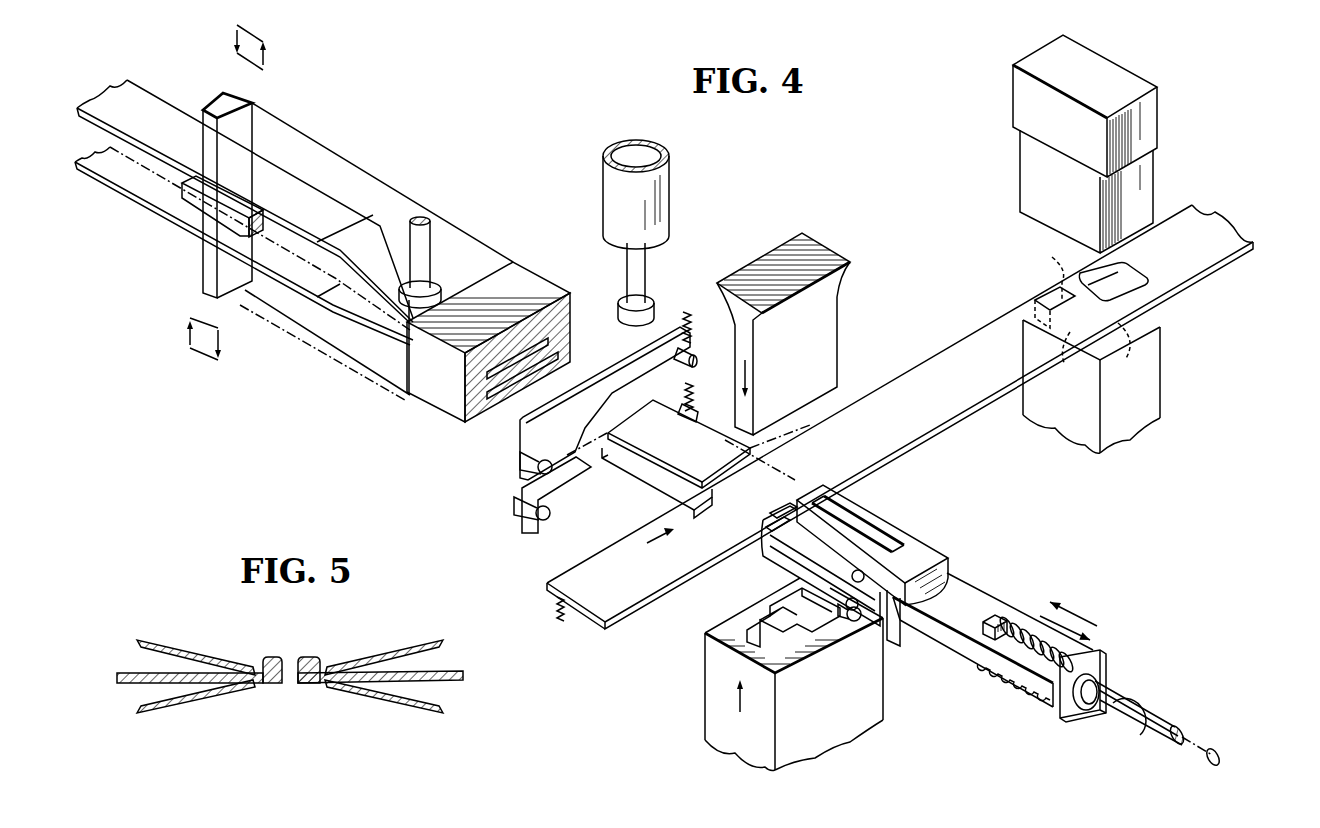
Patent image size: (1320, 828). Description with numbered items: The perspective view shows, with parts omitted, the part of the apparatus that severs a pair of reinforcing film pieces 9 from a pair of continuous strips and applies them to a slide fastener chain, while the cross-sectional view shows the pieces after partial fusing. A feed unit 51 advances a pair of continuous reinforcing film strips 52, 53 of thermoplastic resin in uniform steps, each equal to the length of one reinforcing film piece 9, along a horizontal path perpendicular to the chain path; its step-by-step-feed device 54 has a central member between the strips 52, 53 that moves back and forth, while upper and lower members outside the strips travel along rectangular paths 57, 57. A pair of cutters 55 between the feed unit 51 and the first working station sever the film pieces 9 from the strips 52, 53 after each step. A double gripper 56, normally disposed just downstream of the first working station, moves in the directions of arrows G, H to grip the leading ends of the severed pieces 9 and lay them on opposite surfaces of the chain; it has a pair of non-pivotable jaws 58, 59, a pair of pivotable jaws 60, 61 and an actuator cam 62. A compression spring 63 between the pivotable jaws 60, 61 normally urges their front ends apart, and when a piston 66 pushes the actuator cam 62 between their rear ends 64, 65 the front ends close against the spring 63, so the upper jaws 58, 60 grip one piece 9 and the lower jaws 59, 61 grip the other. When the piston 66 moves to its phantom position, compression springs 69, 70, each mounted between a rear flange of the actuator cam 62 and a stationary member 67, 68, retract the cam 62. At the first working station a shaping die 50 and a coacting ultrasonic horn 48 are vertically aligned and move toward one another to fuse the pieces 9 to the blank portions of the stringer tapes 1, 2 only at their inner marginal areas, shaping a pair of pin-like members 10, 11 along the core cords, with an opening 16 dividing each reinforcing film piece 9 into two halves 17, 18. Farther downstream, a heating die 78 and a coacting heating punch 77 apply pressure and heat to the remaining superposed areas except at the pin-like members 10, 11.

In FIG. 5, the stringer tape 1 is at (440, 670).
In FIG. 5, the stringer tape 2 is at (140, 673).
In FIG. 4, the reinforcing film piece 9 is at (694, 438).
In FIG. 4, the pin-like member 10 is at (1058, 314).
In FIG. 5, the pin-like member 10 is at (308, 658).
In FIG. 4, the pin-like member 11 is at (1065, 365).
In FIG. 5, the pin-like member 11 is at (272, 660).
In FIG. 4, the opening 16 is at (1150, 283).
In FIG. 4, the half of reinforcing film piece 17 is at (1055, 275).
In FIG. 5, the half of reinforcing film piece 17 is at (392, 650).
In FIG. 4, the half of reinforcing film piece 18 is at (1125, 360).
In FIG. 5, the half of reinforcing film piece 18 is at (193, 653).
In FIG. 4, the ultrasonic horn 48 is at (768, 258).
In FIG. 4, the shaping die 50 is at (760, 674).
In FIG. 4, the feed unit 51 is at (561, 264).
In FIG. 4, the continuous reinforcing film strip 52 is at (152, 106).
In FIG. 4, the continuous reinforcing film strip 53 is at (100, 167).
In FIG. 4, the step-by-step-feed device 54 is at (203, 212).
In FIG. 4, the cutter 55 is at (613, 478).
In FIG. 4, the double gripper 56 is at (969, 602).
In FIG. 4, the rectangular path 57 is at (265, 55).
In FIG. 4, the non-pivotable jaw 58 is at (783, 513).
In FIG. 4, the non-pivotable jaw 59 is at (783, 553).
In FIG. 4, the pivotable jaw 60 is at (843, 502).
In FIG. 4, the pivotable jaw 61 is at (800, 582).
In FIG. 4, the actuator cam 62 is at (970, 607).
In FIG. 4, the compression spring 63 is at (862, 622).
In FIG. 4, the rear end of pivotable jaw 64 is at (940, 563).
In FIG. 4, the rear end of pivotable jaw 65 is at (905, 637).
In FIG. 4, the piston 66 is at (1107, 680).
In FIG. 4, the stationary member 67 is at (977, 627).
In FIG. 4, the stationary member 68 is at (980, 668).
In FIG. 4, the compression spring 69 is at (1022, 626).
In FIG. 4, the compression spring 70 is at (1020, 695).
In FIG. 4, the heating punch 77 is at (1145, 133).
In FIG. 4, the heating die 78 is at (1148, 407).
In FIG. 4, the arrow H is at (1037, 608).
In FIG. 4, the arrow G is at (1077, 612).